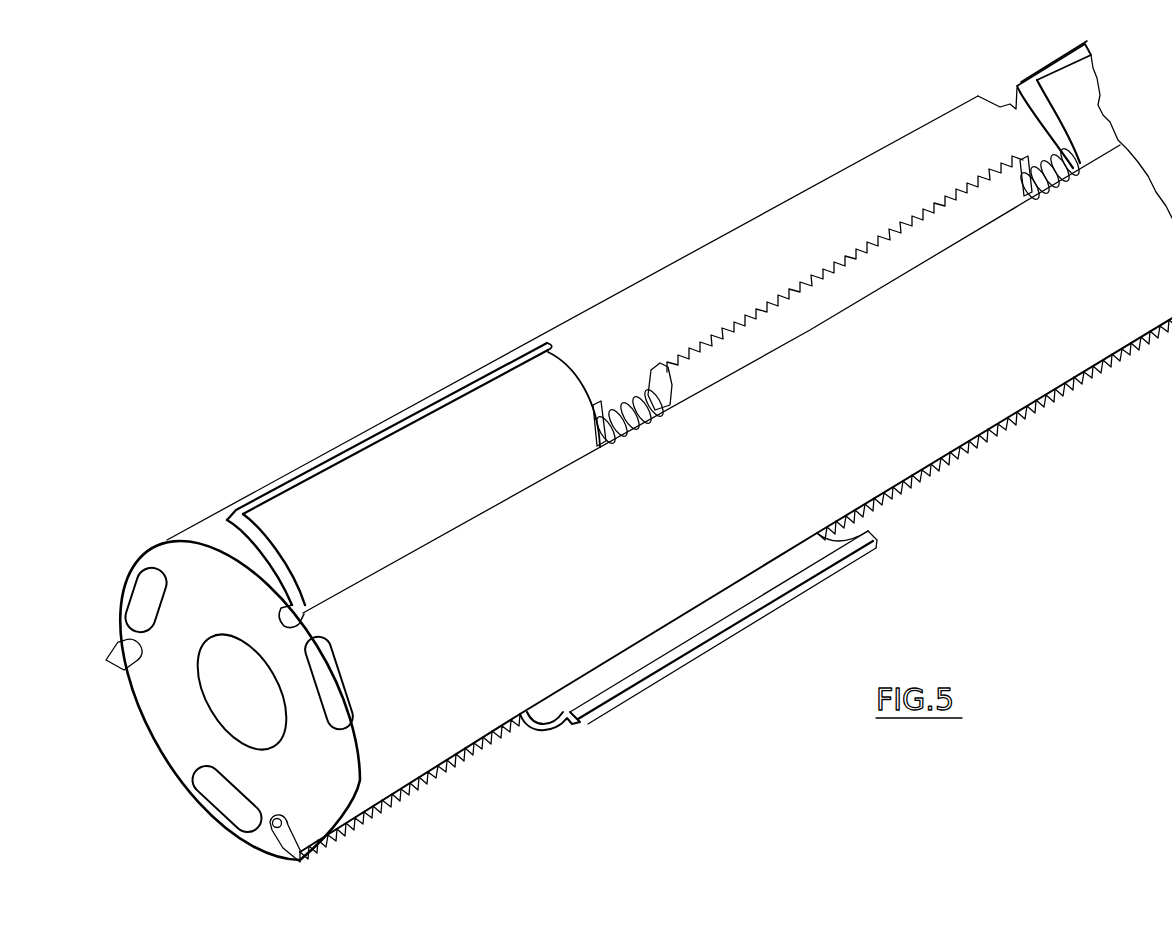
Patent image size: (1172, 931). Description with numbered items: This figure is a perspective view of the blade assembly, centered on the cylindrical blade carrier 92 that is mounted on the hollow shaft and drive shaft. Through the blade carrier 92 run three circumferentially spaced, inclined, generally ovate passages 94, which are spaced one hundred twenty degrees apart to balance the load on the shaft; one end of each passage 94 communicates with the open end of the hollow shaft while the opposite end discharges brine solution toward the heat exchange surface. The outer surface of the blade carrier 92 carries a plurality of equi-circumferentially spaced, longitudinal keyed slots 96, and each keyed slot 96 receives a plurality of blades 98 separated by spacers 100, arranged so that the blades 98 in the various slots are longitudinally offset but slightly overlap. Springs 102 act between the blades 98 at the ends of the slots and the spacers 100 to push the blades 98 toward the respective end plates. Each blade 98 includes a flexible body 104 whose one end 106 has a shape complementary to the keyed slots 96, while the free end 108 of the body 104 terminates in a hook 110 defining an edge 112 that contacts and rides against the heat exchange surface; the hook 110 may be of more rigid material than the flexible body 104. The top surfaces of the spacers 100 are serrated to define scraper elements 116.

The blade carrier 92 is at (998, 338).
The passages 94 is at (145, 590).
The keyed slots 96 is at (275, 820).
The blades 98 is at (527, 452).
The spacers 100 is at (801, 322).
The springs 102 is at (627, 397).
The flexible body 104 is at (1090, 117).
The one end 106 is at (278, 615).
The free end 108 is at (880, 524).
The hook 110 is at (477, 385).
The edge 112 is at (355, 455).
The scraper elements 116 is at (367, 805).